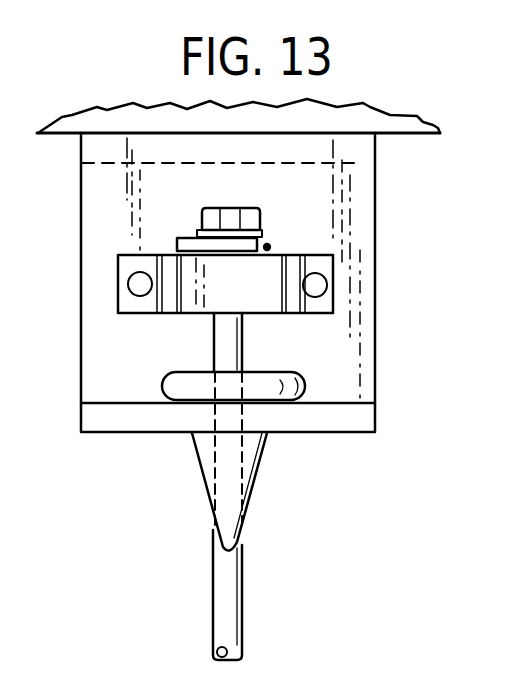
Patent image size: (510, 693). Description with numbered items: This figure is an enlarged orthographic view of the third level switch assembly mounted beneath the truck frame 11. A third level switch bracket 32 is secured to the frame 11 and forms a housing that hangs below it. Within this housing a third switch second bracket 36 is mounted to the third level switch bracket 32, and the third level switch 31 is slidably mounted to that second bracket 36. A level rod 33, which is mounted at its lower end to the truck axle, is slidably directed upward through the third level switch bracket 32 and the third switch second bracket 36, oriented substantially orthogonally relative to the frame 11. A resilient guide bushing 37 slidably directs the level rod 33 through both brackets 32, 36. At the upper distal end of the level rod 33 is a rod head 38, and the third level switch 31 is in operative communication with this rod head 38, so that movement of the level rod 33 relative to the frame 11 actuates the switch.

The frame 11 is at (73, 123).
The third level switch 31 is at (268, 246).
The third level switch bracket 32 is at (95, 232).
The level rod 33 is at (231, 602).
The third switch second bracket 36 is at (188, 318).
The resilient guide bushing 37 is at (212, 453).
The rod head 38 is at (222, 207).